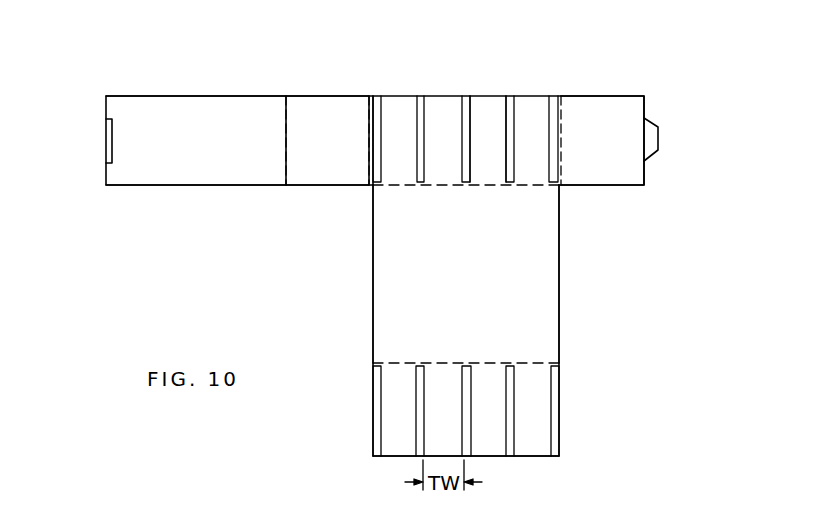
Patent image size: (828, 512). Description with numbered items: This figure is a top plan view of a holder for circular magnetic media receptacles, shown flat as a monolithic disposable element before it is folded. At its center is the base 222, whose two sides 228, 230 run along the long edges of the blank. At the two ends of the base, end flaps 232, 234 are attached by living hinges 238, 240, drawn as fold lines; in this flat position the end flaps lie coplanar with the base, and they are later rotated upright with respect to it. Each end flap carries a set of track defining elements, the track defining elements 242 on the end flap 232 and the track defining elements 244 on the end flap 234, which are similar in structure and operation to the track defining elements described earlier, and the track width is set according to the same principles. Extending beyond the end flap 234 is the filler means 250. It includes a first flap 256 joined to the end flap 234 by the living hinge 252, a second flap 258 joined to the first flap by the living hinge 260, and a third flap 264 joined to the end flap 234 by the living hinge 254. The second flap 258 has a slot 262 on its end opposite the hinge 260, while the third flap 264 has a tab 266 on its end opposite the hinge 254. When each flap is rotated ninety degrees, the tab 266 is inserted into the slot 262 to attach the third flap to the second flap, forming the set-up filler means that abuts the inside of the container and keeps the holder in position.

The base 222 is at (454, 273).
The side 228 is at (372, 226).
The side 230 is at (559, 256).
The end flap 232 is at (488, 447).
The end flap 234 is at (490, 101).
The living hinge 238 is at (536, 362).
The living hinge 240 is at (548, 191).
The track defining elements 242 is at (383, 373).
The track defining elements 244 is at (514, 110).
The filler means 250 is at (328, 92).
The living hinge 252 is at (371, 95).
The living hinge 254 is at (576, 94).
The first flap 256 is at (347, 152).
The second flap 258 is at (215, 152).
The living hinge 260 is at (286, 94).
The slot 262 is at (106, 150).
The third flap 264 is at (622, 150).
The tab 266 is at (650, 155).